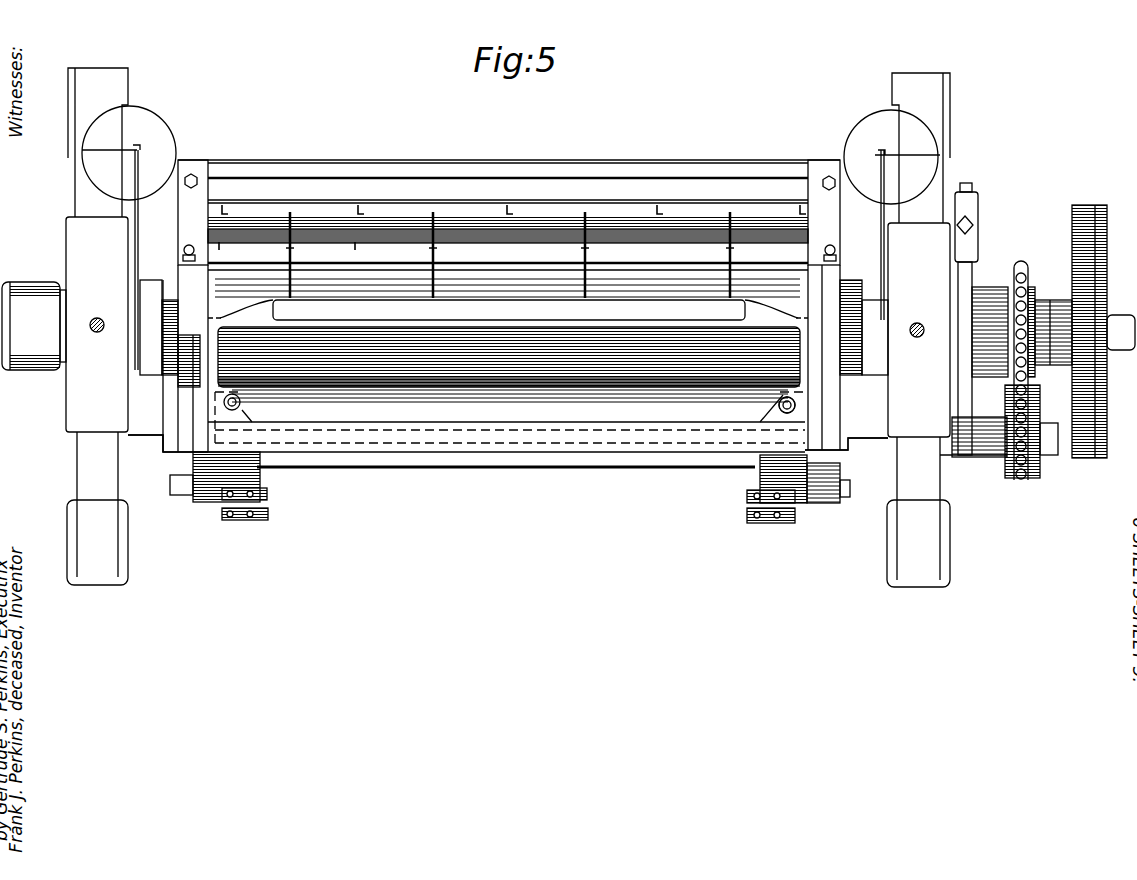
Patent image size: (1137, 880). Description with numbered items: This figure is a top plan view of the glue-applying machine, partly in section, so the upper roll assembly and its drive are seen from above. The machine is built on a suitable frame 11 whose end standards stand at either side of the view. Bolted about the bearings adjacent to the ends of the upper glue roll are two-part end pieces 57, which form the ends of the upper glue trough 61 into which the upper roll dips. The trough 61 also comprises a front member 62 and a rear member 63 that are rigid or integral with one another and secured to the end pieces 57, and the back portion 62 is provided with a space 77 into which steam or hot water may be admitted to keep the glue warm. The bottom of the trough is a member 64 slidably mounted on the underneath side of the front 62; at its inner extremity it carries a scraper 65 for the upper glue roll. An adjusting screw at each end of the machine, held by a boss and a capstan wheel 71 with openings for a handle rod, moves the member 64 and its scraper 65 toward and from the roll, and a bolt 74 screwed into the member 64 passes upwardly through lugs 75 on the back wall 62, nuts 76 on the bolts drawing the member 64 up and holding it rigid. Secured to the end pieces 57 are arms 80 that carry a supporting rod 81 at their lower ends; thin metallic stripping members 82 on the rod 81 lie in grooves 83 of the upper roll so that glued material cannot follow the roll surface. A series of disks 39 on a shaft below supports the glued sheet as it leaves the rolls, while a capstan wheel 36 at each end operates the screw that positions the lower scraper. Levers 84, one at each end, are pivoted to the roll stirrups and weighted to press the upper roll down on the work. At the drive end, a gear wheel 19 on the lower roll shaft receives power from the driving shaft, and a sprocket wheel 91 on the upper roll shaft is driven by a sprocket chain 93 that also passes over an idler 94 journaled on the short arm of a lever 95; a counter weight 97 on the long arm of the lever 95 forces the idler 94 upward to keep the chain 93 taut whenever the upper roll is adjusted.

The frame 11 is at (508, 402).
The gear wheel 19 is at (1093, 428).
The capstan wheel 36 is at (240, 520).
The disks 39 is at (223, 207).
The end pieces 57 is at (203, 408).
The upper glue trough 61 is at (640, 348).
The front member 62 is at (456, 458).
The rear member 63 is at (521, 323).
The bottom member 64 is at (598, 415).
The scraper 65 is at (683, 400).
The capstan wheel 71 is at (267, 495).
The bolt 74 is at (237, 408).
The lugs 75 is at (238, 392).
The nuts 76 is at (795, 408).
The space 77 is at (540, 437).
The arms 80 is at (184, 242).
The supporting rod 81 is at (262, 227).
The stripping members 82 is at (432, 232).
The grooves 83 is at (587, 288).
The levers 84 is at (137, 235).
The sprocket wheel 91 is at (1020, 268).
The sprocket chain 93 is at (1025, 492).
The idler 94 is at (1040, 475).
The lever 95 is at (968, 280).
The counter weight 97 is at (973, 210).